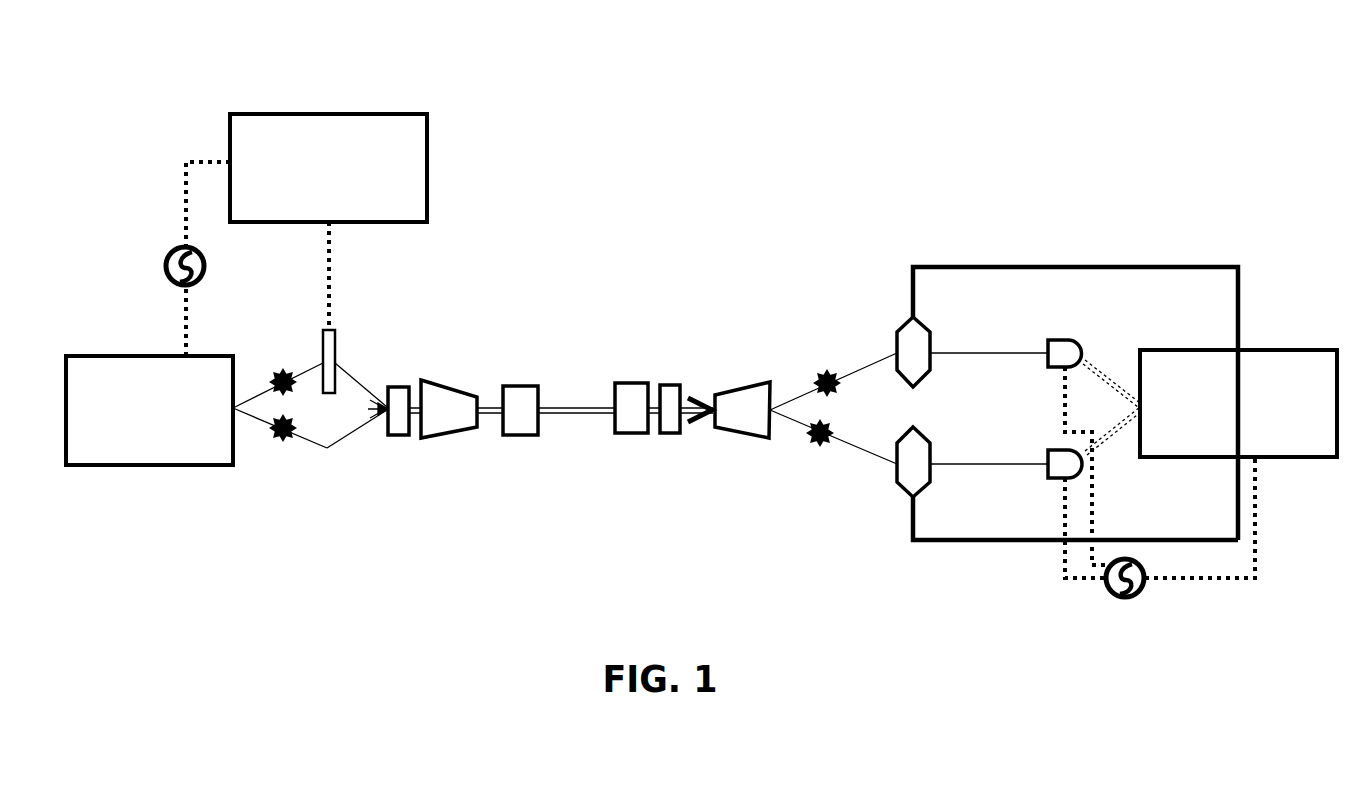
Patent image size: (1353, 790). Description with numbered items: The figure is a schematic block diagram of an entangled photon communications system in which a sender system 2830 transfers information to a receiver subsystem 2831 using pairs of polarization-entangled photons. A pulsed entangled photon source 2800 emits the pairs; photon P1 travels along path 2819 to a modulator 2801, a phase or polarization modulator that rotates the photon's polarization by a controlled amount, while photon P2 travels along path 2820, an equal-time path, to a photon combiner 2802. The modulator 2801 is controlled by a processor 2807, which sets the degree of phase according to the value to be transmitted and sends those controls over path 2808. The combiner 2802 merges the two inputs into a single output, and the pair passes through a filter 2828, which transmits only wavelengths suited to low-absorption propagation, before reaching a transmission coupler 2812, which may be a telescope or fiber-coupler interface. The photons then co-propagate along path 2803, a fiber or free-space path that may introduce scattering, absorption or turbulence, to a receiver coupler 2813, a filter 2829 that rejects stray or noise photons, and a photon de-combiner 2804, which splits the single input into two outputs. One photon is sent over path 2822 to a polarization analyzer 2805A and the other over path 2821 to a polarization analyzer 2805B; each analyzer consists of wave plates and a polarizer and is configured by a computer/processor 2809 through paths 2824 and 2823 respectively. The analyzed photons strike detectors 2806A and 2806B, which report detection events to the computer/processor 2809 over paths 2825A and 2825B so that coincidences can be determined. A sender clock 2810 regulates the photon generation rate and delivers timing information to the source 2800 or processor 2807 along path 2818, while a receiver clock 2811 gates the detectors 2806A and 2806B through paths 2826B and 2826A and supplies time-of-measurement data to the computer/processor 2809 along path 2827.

The pulsed entangled photon source 2800 is at (118, 348).
The modulator 2801 is at (340, 352).
The photon combiner 2802 is at (449, 380).
The path 2803 is at (586, 420).
The photon de-combiner 2804 is at (723, 388).
The polarization analyzer 2805A is at (891, 318).
The polarization analyzer 2805B is at (890, 489).
The detector 2806A is at (1068, 332).
The detector 2806B is at (1046, 481).
The processor 2807 is at (328, 168).
The path 2808 is at (338, 255).
The computer/processor 2809 is at (1238, 403).
The clock 2810 is at (155, 253).
The clock 2811 is at (1109, 594).
The transmission coupler 2812 is at (513, 440).
The receiver coupler 2813 is at (633, 378).
The path 2818 is at (173, 172).
The path 2819 is at (358, 387).
The path 2820 is at (360, 445).
The path 2821 is at (790, 428).
The path 2822 is at (792, 388).
The path 2823 is at (940, 548).
The path 2824 is at (988, 255).
The path 2825A is at (1108, 365).
The path 2825B is at (1122, 440).
The path 2826A is at (1050, 560).
The path 2826B is at (1055, 410).
The path 2827 is at (1265, 530).
The filter 2828 is at (400, 442).
The filter 2829 is at (669, 442).
The sender system 2830 is at (232, 66).
The receiver subsystem 2831 is at (1083, 142).
The photon P1 is at (272, 360).
The photon P2 is at (278, 453).